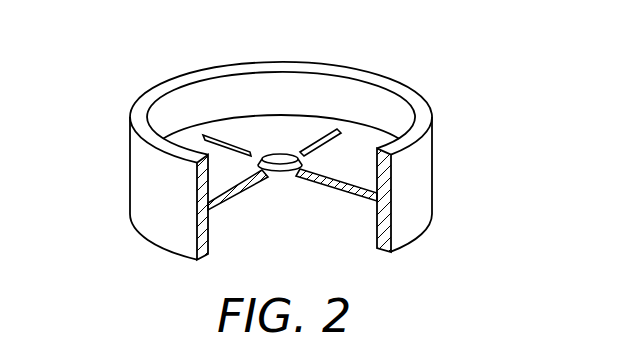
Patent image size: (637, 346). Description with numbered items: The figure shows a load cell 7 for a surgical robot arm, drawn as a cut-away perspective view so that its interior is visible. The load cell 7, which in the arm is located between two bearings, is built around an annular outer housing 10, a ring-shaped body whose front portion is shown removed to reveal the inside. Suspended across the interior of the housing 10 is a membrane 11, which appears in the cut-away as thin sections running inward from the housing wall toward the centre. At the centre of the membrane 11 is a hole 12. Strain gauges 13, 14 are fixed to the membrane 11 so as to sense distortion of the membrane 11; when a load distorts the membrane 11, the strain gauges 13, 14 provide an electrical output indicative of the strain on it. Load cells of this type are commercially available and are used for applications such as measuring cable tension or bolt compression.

The load cell 7 is at (118, 190).
The annular outer housing 10 is at (427, 170).
The membrane 11 is at (347, 173).
The hole 12 is at (280, 171).
The strain gauge 13 is at (324, 141).
The strain gauge 14 is at (221, 141).